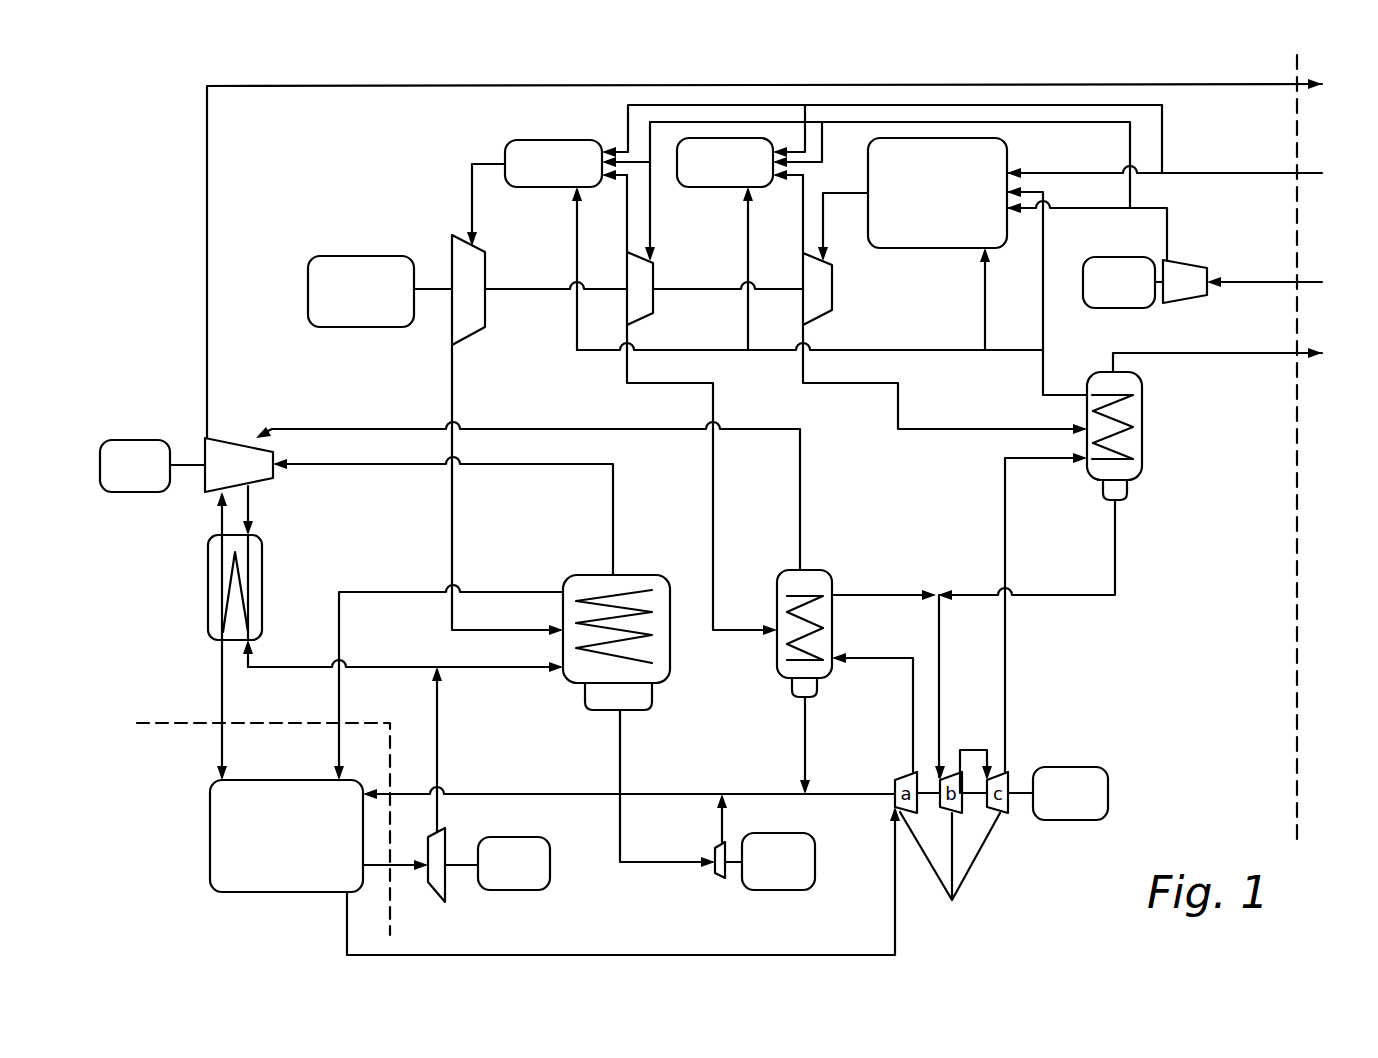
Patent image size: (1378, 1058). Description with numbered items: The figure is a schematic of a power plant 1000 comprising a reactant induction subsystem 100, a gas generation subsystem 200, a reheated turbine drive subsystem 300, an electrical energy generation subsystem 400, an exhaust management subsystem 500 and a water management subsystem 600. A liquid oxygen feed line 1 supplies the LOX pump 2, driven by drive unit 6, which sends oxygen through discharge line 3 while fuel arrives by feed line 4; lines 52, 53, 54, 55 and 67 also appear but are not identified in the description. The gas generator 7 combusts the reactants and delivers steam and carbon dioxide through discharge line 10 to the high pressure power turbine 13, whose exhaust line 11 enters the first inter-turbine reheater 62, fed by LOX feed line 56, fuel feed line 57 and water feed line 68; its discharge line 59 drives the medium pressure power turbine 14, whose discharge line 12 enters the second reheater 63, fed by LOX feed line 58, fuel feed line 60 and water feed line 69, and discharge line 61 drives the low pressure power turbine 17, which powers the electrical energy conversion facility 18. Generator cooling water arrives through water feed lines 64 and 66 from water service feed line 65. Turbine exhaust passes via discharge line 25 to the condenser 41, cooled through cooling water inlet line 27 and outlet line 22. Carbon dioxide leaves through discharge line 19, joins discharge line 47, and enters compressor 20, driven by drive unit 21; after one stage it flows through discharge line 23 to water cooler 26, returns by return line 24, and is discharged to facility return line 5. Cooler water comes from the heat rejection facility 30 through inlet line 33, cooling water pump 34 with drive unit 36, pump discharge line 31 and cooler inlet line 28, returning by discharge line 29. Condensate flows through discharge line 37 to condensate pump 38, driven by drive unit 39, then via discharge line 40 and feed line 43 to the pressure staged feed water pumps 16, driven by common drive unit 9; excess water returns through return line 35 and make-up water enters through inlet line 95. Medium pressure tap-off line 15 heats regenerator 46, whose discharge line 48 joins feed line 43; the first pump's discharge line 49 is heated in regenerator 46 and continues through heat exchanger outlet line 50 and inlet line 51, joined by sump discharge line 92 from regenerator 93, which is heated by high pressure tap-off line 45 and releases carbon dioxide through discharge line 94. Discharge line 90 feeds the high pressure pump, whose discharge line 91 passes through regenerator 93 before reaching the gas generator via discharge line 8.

The liquid oxygen feed line 1 is at (1238, 282).
The LOX pump 2 is at (1178, 303).
The discharge line 3 is at (1170, 252).
The fuel feed line 4 is at (1213, 171).
The facility return line 5 is at (209, 252).
The drive unit 6 is at (1112, 257).
The gas generator 7 is at (950, 248).
The discharge line 8 is at (1055, 393).
The drive unit 9 is at (1060, 767).
The discharge line 10 is at (838, 205).
The high pressure power turbine exhaust line 11 is at (804, 215).
The medium pressure power turbine discharge line 12 is at (628, 232).
The high pressure power turbine 13 is at (834, 305).
The medium pressure power turbine 14 is at (655, 262).
The medium power turbine tap-off line 15 is at (713, 492).
The pressure staged feed water pumps 16 is at (952, 900).
The low pressure power turbine 17 is at (452, 237).
The electrical energy conversion facility 18 is at (365, 256).
The discharge line 19 is at (613, 510).
The compressor 20 is at (200, 442).
The drive unit 21 is at (152, 438).
The cooling water outlet line 22 is at (352, 597).
The discharge line 23 is at (250, 500).
The return line 24 is at (222, 522).
The discharge line 25 is at (453, 505).
The water cooler 26 is at (262, 580).
The cooling water inlet line 27 is at (475, 668).
The cooler inlet line 28 is at (265, 665).
The discharge line 29 is at (222, 700).
The heat rejection facility 30 is at (210, 822).
The pump discharge line 31 is at (438, 745).
The inlet line 33 is at (378, 866).
The cooling water pump 34 is at (428, 880).
The return line 35 is at (472, 794).
The drive unit 36 is at (550, 863).
The discharge line 37 is at (633, 862).
The condensate pump 38 is at (717, 875).
The drive unit 39 is at (816, 858).
The discharge line 40 is at (730, 830).
The exhaust recovery condenser 41 is at (637, 575).
The feed line 43 is at (823, 793).
The high pressure power tap-off line 45 is at (920, 428).
The regenerator 46 is at (788, 570).
The discharge line 47 is at (800, 492).
The discharge line 48 is at (807, 730).
The discharge line 49 is at (867, 658).
The heat exchanger outlet line 50 is at (855, 594).
The inlet line 51 is at (941, 660).
The stream 52 is at (1163, 138).
The stream 53 is at (1105, 212).
The stream 54 is at (1055, 172).
The stream 55 is at (1075, 125).
The reheater LOX feed line 56 is at (808, 153).
The reheater fuel feed line 57 is at (808, 147).
The reheater LOX feed line 58 is at (630, 128).
The reheater discharge line 59 is at (651, 220).
The reheater fuel feed line 60 is at (627, 142).
The reheater discharge line 61 is at (472, 197).
The first inter-turbine reheater 62 is at (722, 190).
The second inter-turbine reheater 63 is at (560, 190).
The water feed line 64 is at (1040, 272).
The water service feed line 65 is at (1040, 348).
The water feed line 66 is at (985, 305).
The stream 67 is at (912, 350).
The reheater water feed line 68 is at (750, 253).
The reheater water feed line 69 is at (577, 253).
The discharge line 90 is at (960, 750).
The discharge line 91 is at (1007, 660).
The sump discharge line 92 is at (1043, 592).
The regenerator 93 is at (1143, 432).
The discharge line 94 is at (1230, 354).
The inlet line 95 is at (575, 955).
The reactant induction subsystem 100 is at (1313, 221).
The gas generation subsystem 200 is at (910, 206).
The reheated turbine drive subsystem 300 is at (673, 286).
The electrical energy generation subsystem 400 is at (336, 373).
The exhaust management subsystem 500 is at (545, 563).
The regenerated water management subsystem 600 is at (1036, 864).
The electrical energy generating power plant 1000 is at (1192, 606).